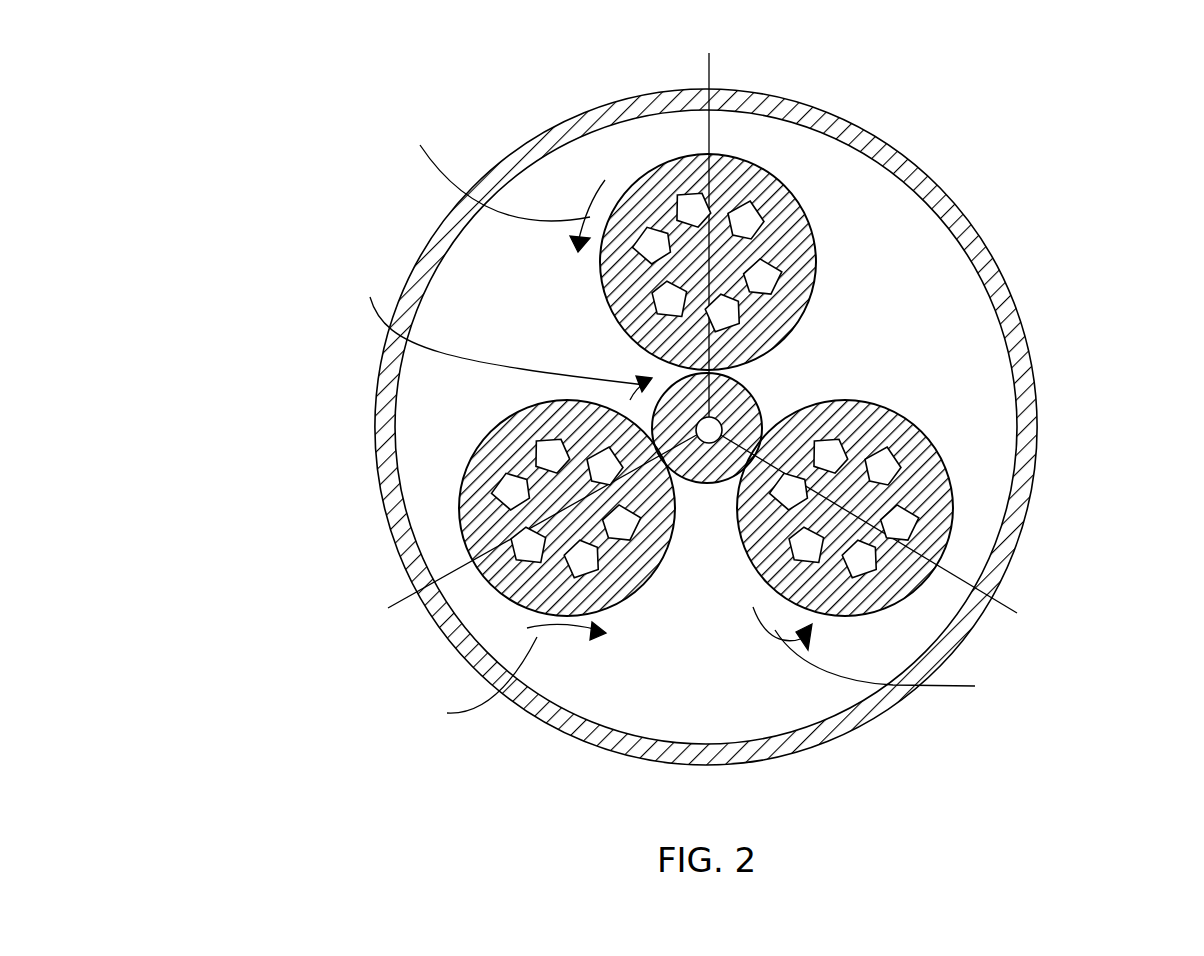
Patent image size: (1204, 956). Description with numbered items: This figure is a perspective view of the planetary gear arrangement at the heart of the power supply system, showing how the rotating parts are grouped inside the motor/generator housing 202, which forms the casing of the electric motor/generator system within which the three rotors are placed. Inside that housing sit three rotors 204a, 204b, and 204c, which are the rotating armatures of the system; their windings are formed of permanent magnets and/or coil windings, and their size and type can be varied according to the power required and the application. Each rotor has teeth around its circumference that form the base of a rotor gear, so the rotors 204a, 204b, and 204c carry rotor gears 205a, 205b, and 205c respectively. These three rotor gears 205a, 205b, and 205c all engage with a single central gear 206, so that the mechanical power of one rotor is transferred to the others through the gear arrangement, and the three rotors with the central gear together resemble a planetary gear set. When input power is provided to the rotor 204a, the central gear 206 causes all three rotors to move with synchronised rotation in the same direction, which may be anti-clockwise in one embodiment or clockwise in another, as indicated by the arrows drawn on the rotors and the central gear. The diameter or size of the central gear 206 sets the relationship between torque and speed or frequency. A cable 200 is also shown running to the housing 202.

The cable 200 is at (699, 396).
The motor/generator housing 202 is at (792, 95).
The rotor 204a is at (818, 265).
The rotor 204b is at (922, 478).
The rotor 204c is at (530, 428).
The rotor gear 205a is at (800, 210).
The rotor gear 205b is at (903, 522).
The rotor gear 205c is at (458, 503).
The central gear 206 is at (755, 388).